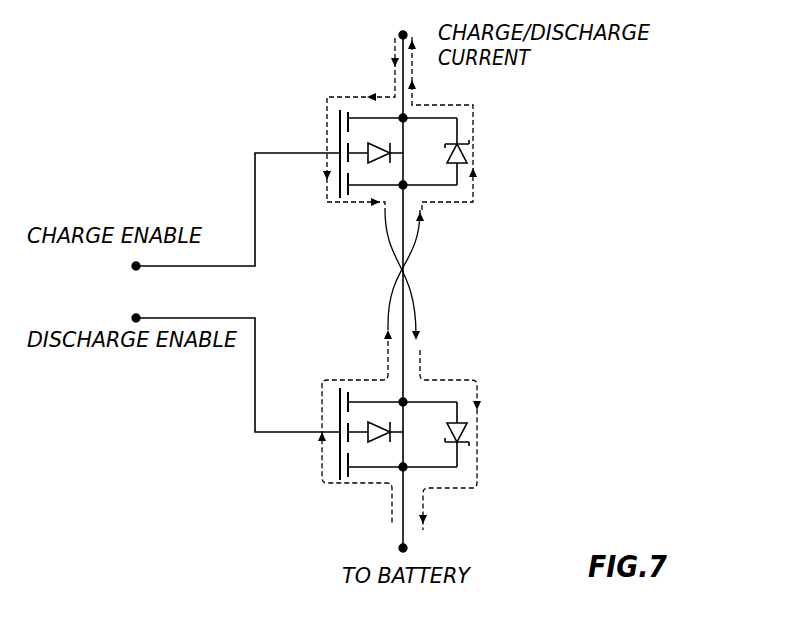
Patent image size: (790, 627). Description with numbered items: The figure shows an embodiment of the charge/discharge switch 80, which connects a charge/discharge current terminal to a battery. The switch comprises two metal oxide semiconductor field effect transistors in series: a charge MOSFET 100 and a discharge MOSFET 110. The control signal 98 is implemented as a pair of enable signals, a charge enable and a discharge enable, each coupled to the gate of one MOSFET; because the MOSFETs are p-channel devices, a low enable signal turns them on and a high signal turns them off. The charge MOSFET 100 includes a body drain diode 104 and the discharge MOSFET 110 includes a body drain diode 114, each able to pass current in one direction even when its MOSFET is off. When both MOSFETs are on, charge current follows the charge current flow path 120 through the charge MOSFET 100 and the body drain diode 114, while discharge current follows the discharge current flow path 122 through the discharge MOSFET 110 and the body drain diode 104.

The charge/discharge switch 80 is at (205, 95).
The control signal 98 is at (185, 318).
The charge MOSFET 100 is at (495, 145).
The body drain diode 104 is at (465, 153).
The discharge MOSFET 110 is at (498, 383).
The body drain diode 114 is at (466, 432).
The charge current flow path 120 is at (395, 53).
The discharge current flow path 122 is at (392, 502).